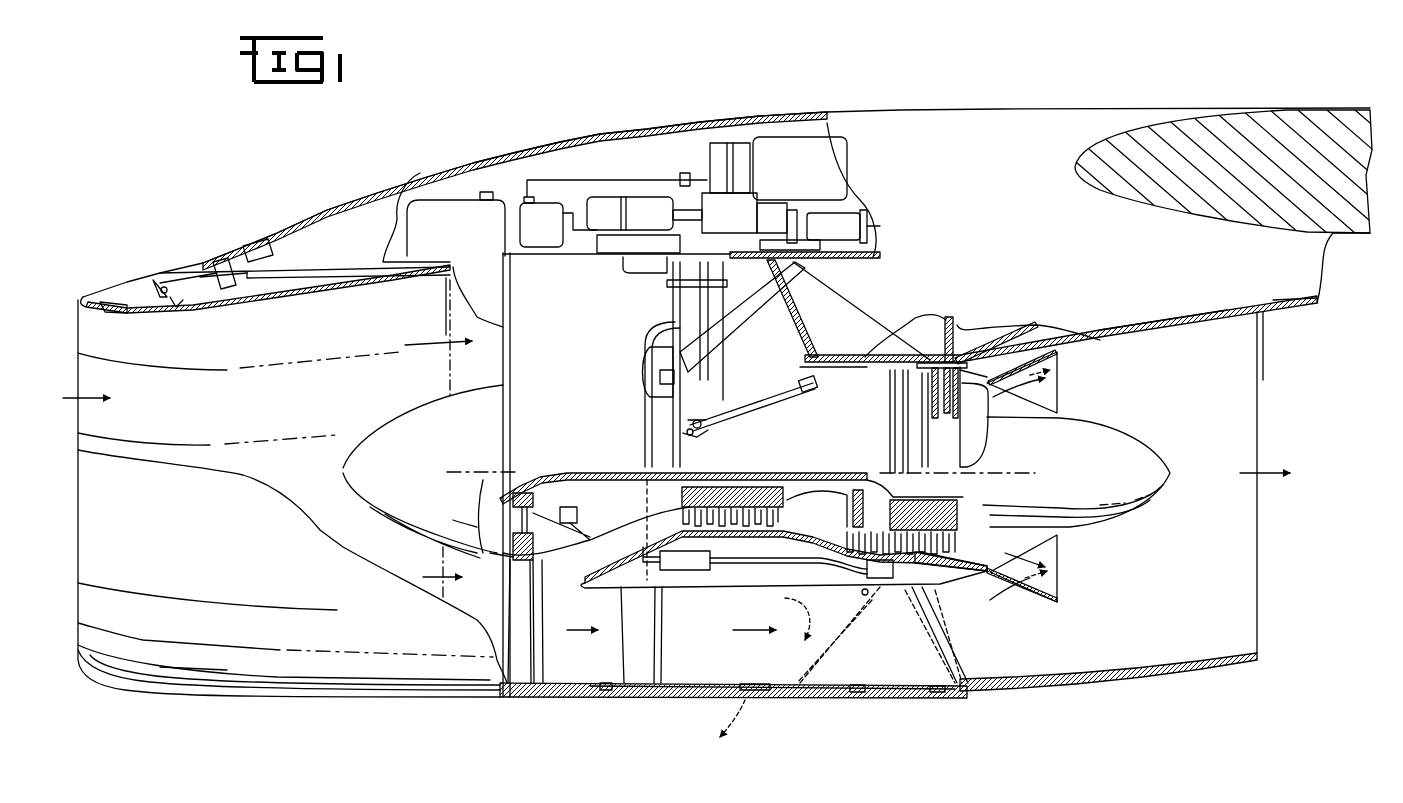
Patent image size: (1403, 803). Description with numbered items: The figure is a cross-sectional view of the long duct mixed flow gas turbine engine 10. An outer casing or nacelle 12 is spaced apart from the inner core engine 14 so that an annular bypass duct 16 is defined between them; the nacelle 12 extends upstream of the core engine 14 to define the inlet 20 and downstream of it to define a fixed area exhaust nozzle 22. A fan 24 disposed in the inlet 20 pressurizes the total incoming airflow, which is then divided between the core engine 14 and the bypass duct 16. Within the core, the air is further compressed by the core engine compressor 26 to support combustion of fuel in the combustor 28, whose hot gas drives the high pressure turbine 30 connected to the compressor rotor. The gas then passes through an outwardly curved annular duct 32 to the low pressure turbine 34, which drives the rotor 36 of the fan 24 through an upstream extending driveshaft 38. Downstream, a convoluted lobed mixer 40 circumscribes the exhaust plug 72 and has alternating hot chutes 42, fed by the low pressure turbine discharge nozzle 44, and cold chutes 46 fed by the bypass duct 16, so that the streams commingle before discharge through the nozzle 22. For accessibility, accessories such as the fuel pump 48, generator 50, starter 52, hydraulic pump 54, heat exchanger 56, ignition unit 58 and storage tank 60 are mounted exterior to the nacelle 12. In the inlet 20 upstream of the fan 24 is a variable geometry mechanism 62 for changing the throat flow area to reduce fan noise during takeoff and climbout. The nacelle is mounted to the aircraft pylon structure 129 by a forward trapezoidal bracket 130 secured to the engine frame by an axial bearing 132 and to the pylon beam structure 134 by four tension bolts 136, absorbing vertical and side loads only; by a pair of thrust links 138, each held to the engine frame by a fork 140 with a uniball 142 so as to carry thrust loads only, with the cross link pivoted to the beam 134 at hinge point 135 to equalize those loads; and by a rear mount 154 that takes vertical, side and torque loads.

The mixed flow gas turbine engine 10 is at (188, 232).
The outer casing or nacelle 12 is at (388, 246).
The inner core engine 14 is at (825, 469).
The annular bypass duct 16 is at (727, 660).
The inlet 20 is at (168, 420).
The fixed area exhaust nozzle 22 is at (1260, 624).
The fan 24 is at (541, 662).
The core engine compressor 26 is at (714, 486).
The combustor 28 is at (822, 532).
The high pressure turbine 30 is at (860, 527).
The outwardly curved annular duct 32 is at (853, 544).
The low pressure turbine 34 is at (1012, 548).
The rotor of the fan 36 is at (545, 485).
The driveshaft 38 is at (753, 474).
The convoluted lobed mixer 40 is at (1043, 603).
The hot chutes 42 is at (1057, 553).
The low pressure turbine discharge nozzle 44 is at (791, 701).
The cold chutes 46 is at (1052, 588).
The fuel pump 48 is at (540, 204).
The generator 50 is at (643, 197).
The starter 52 is at (838, 178).
The hydraulic pump 54 is at (846, 218).
The heat exchanger 56 is at (774, 208).
The ignition unit 58 is at (540, 250).
The storage tank 60 is at (453, 233).
The variable geometry mechanism 62 is at (281, 310).
The exhaust plug 72 is at (1138, 508).
The aircraft pylon structure 129 is at (1080, 107).
The forward trapezoidal bracket 130 is at (738, 314).
The axial bearing 132 is at (650, 380).
The aircraft pylon beam structure 134 is at (858, 340).
The hinge point 135 is at (862, 357).
The tension bolts 136 is at (796, 290).
The thrust links 138 is at (764, 410).
The fork 140 is at (700, 434).
The uniball 142 is at (698, 418).
The rear mount 154 is at (975, 368).